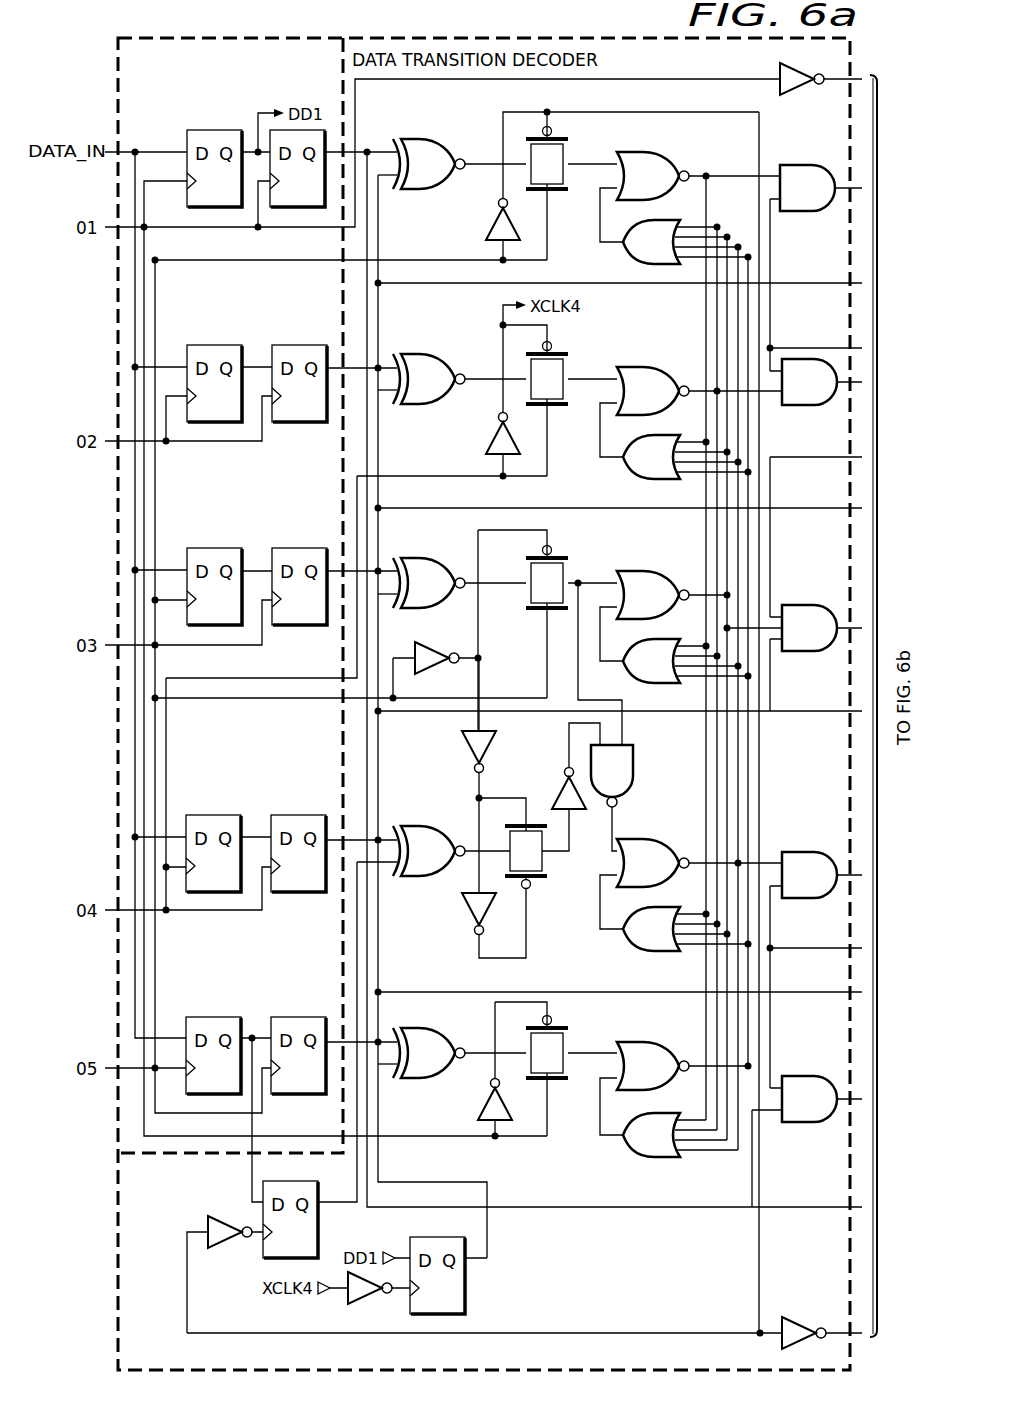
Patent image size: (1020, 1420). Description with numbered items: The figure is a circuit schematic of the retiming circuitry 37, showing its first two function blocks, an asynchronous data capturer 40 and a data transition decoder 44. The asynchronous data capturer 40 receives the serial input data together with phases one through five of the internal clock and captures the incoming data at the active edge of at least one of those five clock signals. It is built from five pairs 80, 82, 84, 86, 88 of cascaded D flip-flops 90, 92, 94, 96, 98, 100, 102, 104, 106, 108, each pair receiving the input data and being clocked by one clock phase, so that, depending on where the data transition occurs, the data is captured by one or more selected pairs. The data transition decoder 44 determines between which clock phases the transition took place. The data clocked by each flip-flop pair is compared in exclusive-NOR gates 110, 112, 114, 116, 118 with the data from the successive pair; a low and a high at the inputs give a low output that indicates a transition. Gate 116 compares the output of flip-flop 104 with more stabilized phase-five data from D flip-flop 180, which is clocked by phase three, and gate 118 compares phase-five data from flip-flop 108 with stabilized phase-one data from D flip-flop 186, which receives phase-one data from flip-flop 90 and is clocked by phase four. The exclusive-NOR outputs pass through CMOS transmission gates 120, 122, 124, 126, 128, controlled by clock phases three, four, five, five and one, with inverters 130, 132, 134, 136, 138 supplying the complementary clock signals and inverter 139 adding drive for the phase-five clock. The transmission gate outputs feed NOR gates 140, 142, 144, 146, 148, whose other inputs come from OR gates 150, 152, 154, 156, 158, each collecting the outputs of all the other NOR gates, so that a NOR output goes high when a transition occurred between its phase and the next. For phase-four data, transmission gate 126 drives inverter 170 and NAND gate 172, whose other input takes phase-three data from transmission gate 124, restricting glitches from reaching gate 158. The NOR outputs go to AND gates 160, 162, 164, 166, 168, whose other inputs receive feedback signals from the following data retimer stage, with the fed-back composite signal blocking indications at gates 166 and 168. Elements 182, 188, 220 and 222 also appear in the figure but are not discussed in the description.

The retiming circuitry 37 is at (110, 51).
The asynchronous data capturer 40 is at (118, 120).
The data transition decoder 44 is at (292, 1257).
The pair of cascaded D flip-flops 80 is at (226, 180).
The pair of cascaded D flip-flops 82 is at (249, 344).
The pair of cascaded D flip-flops 84 is at (249, 536).
The pair of cascaded D flip-flops 86 is at (248, 813).
The pair of cascaded D flip-flops 88 is at (248, 1017).
The D flip-flop 90 is at (210, 207).
The D flip-flop 92 is at (292, 207).
The D flip-flop 94 is at (220, 345).
The D flip-flop 96 is at (297, 345).
The D flip-flop 98 is at (220, 548).
The D flip-flop 100 is at (297, 548).
The D flip-flop 102 is at (228, 815).
The D flip-flop 104 is at (297, 815).
The D flip-flop 106 is at (228, 1017).
The D flip-flop 108 is at (297, 1017).
The exclusive-NOR gate 110 is at (432, 140).
The exclusive-NOR gate 112 is at (440, 356).
The exclusive-NOR gate 114 is at (406, 558).
The exclusive-NOR gate 116 is at (408, 877).
The exclusive-NOR gate 118 is at (440, 1030).
The CMOS transmission gate 120 is at (562, 194).
The CMOS transmission gate 122 is at (562, 409).
The CMOS transmission gate 124 is at (565, 555).
The CMOS transmission gate 126 is at (542, 880).
The CMOS transmission gate 128 is at (562, 1081).
The inverter 130 is at (487, 220).
The inverter 132 is at (487, 435).
The inverter 134 is at (437, 643).
The inverter 136 is at (470, 930).
The inverter 138 is at (479, 1098).
The inverter 139 is at (466, 760).
The NOR gate 140 is at (672, 166).
The NOR gate 142 is at (628, 368).
The NOR gate 144 is at (633, 571).
The NOR gate 146 is at (645, 840).
The NOR gate 148 is at (617, 1045).
The OR gate 150 is at (620, 251).
The OR gate 152 is at (620, 468).
The OR gate 154 is at (615, 682).
The OR gate 156 is at (625, 952).
The OR gate 158 is at (620, 1150).
The AND gate 160 is at (798, 212).
The AND gate 162 is at (797, 406).
The AND gate 164 is at (805, 605).
The AND gate 166 is at (800, 852).
The AND gate 168 is at (805, 1076).
The inverter 170 is at (556, 785).
The NAND gate 172 is at (636, 758).
The D flip-flop 180 is at (318, 1226).
The inverter 182 is at (222, 1250).
The D flip-flop 186 is at (466, 1281).
The inverter 188 is at (345, 1296).
The inverter 220 is at (800, 96).
The inverter 222 is at (800, 1317).